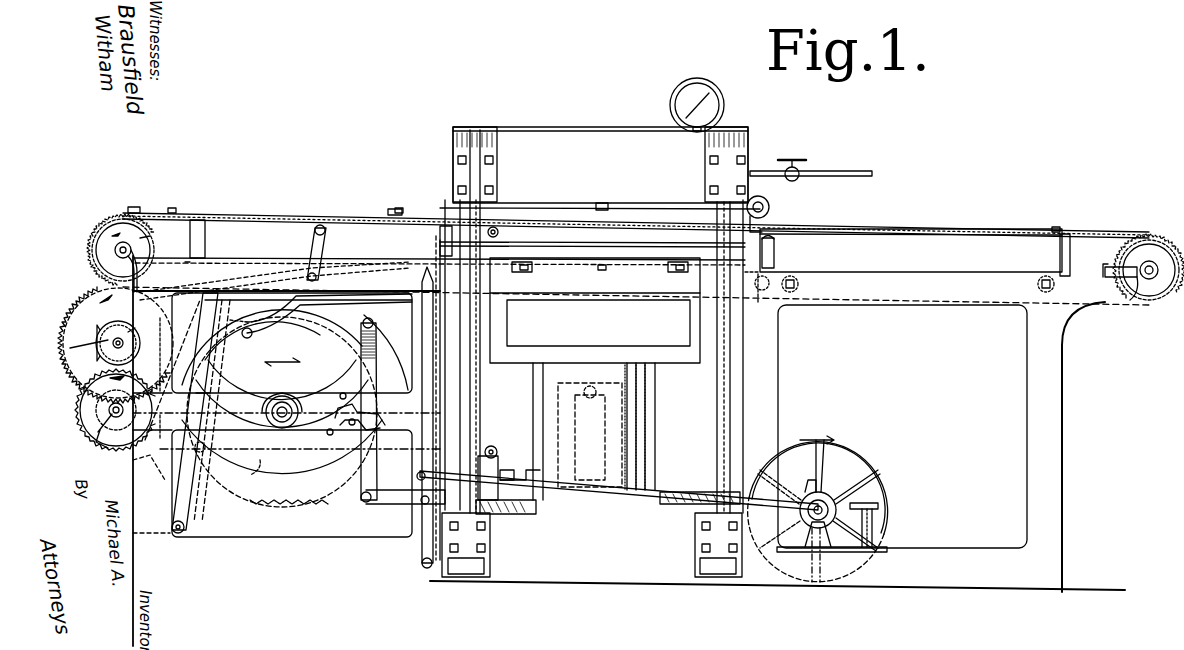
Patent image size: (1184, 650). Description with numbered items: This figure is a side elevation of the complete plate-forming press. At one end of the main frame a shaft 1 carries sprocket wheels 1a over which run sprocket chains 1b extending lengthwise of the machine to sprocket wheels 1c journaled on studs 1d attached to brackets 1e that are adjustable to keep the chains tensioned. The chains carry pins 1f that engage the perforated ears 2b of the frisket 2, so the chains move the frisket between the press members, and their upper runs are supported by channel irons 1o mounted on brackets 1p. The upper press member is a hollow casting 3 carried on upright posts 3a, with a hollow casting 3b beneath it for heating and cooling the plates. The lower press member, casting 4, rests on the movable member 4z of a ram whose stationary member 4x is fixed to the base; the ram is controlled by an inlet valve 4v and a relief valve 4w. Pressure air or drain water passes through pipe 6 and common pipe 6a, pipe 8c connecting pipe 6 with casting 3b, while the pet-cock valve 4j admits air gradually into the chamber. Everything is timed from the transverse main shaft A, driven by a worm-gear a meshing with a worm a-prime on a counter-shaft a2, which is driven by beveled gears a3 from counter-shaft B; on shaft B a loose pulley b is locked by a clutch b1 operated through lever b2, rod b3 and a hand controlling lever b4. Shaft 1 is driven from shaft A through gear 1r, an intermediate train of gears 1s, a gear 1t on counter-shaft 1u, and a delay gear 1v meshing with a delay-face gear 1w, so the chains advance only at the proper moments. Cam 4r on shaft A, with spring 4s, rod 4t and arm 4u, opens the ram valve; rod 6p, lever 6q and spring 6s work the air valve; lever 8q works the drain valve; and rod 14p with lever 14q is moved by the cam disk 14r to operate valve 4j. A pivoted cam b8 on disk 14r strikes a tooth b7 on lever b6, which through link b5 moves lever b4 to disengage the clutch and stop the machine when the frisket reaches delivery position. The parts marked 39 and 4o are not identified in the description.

The shaft 1 is at (115, 250).
The sprocket wheels 1a is at (100, 236).
The sprocket chains 1b is at (182, 214).
The sprocket wheels 1c is at (1152, 250).
The studs 1d is at (1152, 278).
The brackets 1e is at (1123, 280).
The pins 1f is at (172, 208).
The channel irons 1o is at (252, 222).
The brackets 1p is at (200, 232).
The gear 1r is at (86, 264).
The intermediate train of gears 1s is at (78, 352).
The gear 1t is at (95, 408).
The counter-shaft 1u is at (100, 428).
The delay gear 1v is at (92, 452).
The gear 1w is at (343, 520).
The frisket 2 is at (290, 215).
The perforated ears 2b is at (132, 207).
The upper press member 3 is at (592, 204).
The upright posts 3a is at (470, 256).
The hollow casting 3b is at (660, 210).
The valve 39 is at (810, 170).
The lower press member 4 is at (652, 252).
The pet-cock valve 4j is at (498, 230).
The rod pivot 4o is at (496, 228).
The cam 4r is at (165, 330).
The spring 4s is at (200, 262).
The rod 4t is at (484, 448).
The arm 4u is at (506, 458).
The relief valve 4w is at (512, 478).
The inlet valve 4v is at (512, 502).
The stationary member 4x is at (648, 412).
The movable member 4z is at (566, 356).
The pipe 6 is at (774, 256).
The common pipe 6a is at (746, 296).
The rod 6p is at (321, 316).
The lever 6q is at (170, 480).
The spring 6s is at (232, 286).
The pipe 8c is at (770, 210).
The lever 8q is at (127, 343).
The rod 14p is at (428, 226).
The lever 14q is at (318, 250).
The cam disk 14r is at (295, 408).
The main shaft A is at (280, 418).
The counter-shaft B is at (806, 536).
The worm-gear a is at (212, 500).
The worm a-prime is at (250, 500).
The counter-shaft a2 is at (676, 506).
The beveled gear a3 is at (808, 490).
The loose pulley b is at (846, 460).
The clutch b1 is at (828, 496).
The lever b2 is at (876, 504).
The rod b3 is at (670, 492).
The controlling lever b4 is at (412, 345).
The link b5 is at (378, 506).
The lever b6 is at (350, 392).
The tooth b7 is at (370, 415).
The pivoted cam b8 is at (322, 440).